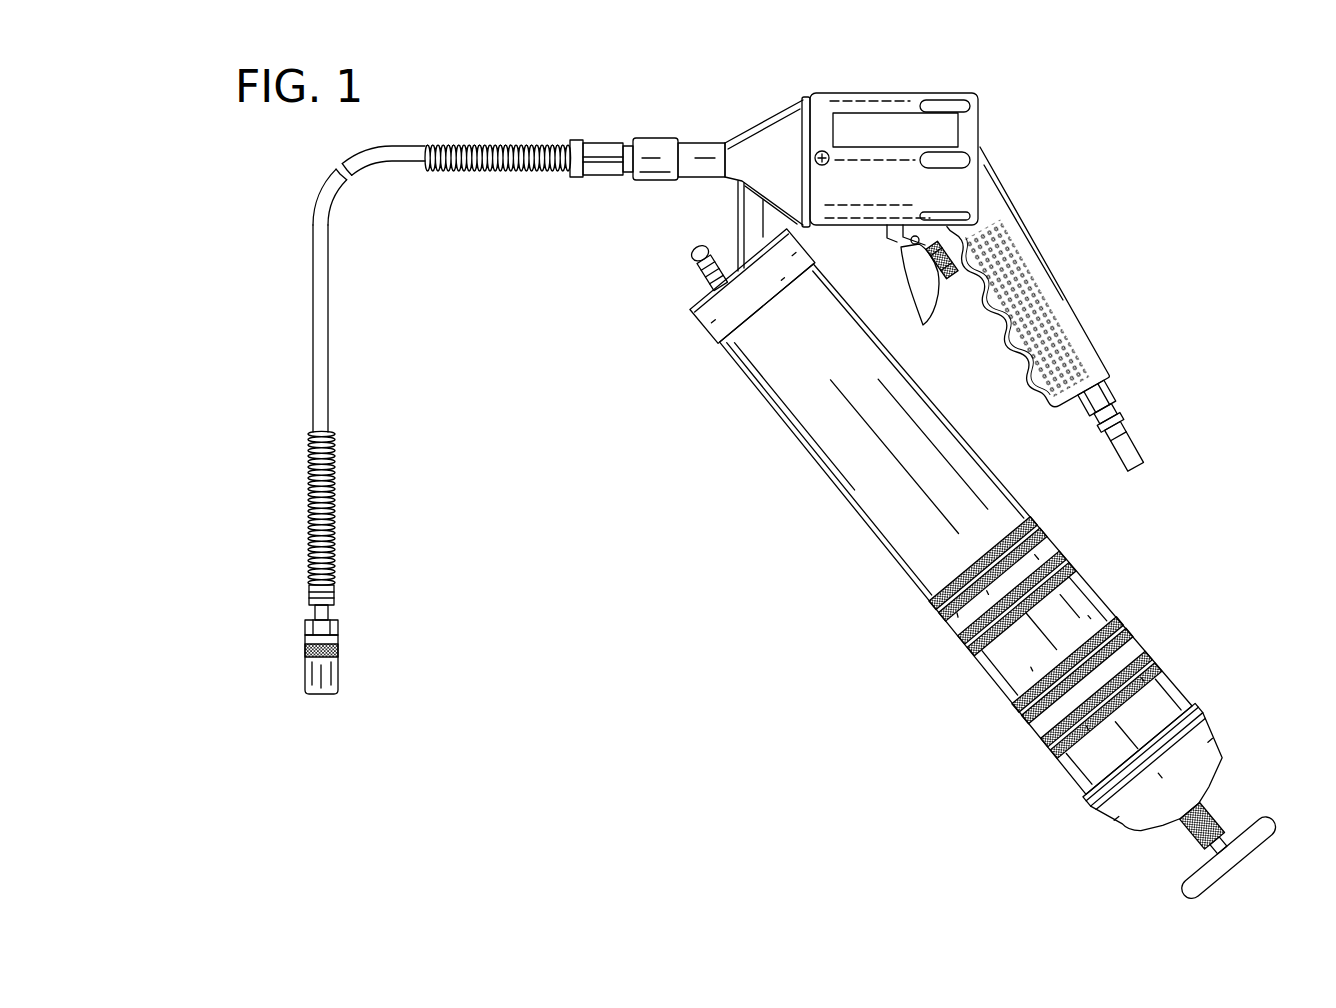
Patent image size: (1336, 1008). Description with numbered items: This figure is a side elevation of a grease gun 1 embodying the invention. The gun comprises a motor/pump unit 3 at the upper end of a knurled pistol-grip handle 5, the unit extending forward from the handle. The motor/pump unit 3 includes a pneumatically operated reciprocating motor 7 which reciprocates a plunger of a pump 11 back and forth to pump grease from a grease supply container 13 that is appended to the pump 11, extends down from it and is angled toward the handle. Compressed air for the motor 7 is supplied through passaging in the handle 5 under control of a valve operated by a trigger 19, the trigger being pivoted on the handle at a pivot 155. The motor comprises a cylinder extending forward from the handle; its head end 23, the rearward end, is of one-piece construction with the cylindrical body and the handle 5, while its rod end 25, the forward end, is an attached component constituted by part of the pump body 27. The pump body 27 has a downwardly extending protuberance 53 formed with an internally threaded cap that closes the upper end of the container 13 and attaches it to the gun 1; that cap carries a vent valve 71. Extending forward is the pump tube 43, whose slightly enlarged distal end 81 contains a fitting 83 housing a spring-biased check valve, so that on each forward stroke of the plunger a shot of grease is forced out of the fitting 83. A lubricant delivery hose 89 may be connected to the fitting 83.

The grease gun 1 is at (1138, 247).
The motor/pump unit 3 is at (984, 99).
The knurled pistol-grip handle 5 is at (1096, 321).
The reciprocating motor 7 is at (870, 92).
The pump 11 is at (744, 130).
The grease supply container 13 is at (858, 522).
The trigger 19 is at (930, 302).
The head end 23 is at (978, 190).
The rod end 25 is at (786, 112).
The pump body 27 is at (785, 175).
The pump tube 43 is at (700, 140).
The protuberance 53 is at (738, 222).
The vent valve 71 is at (690, 246).
The distal end 81 is at (640, 178).
The fitting 83 is at (604, 140).
The lubricant delivery hose 89 is at (305, 410).
The trigger pivot 155 is at (926, 265).